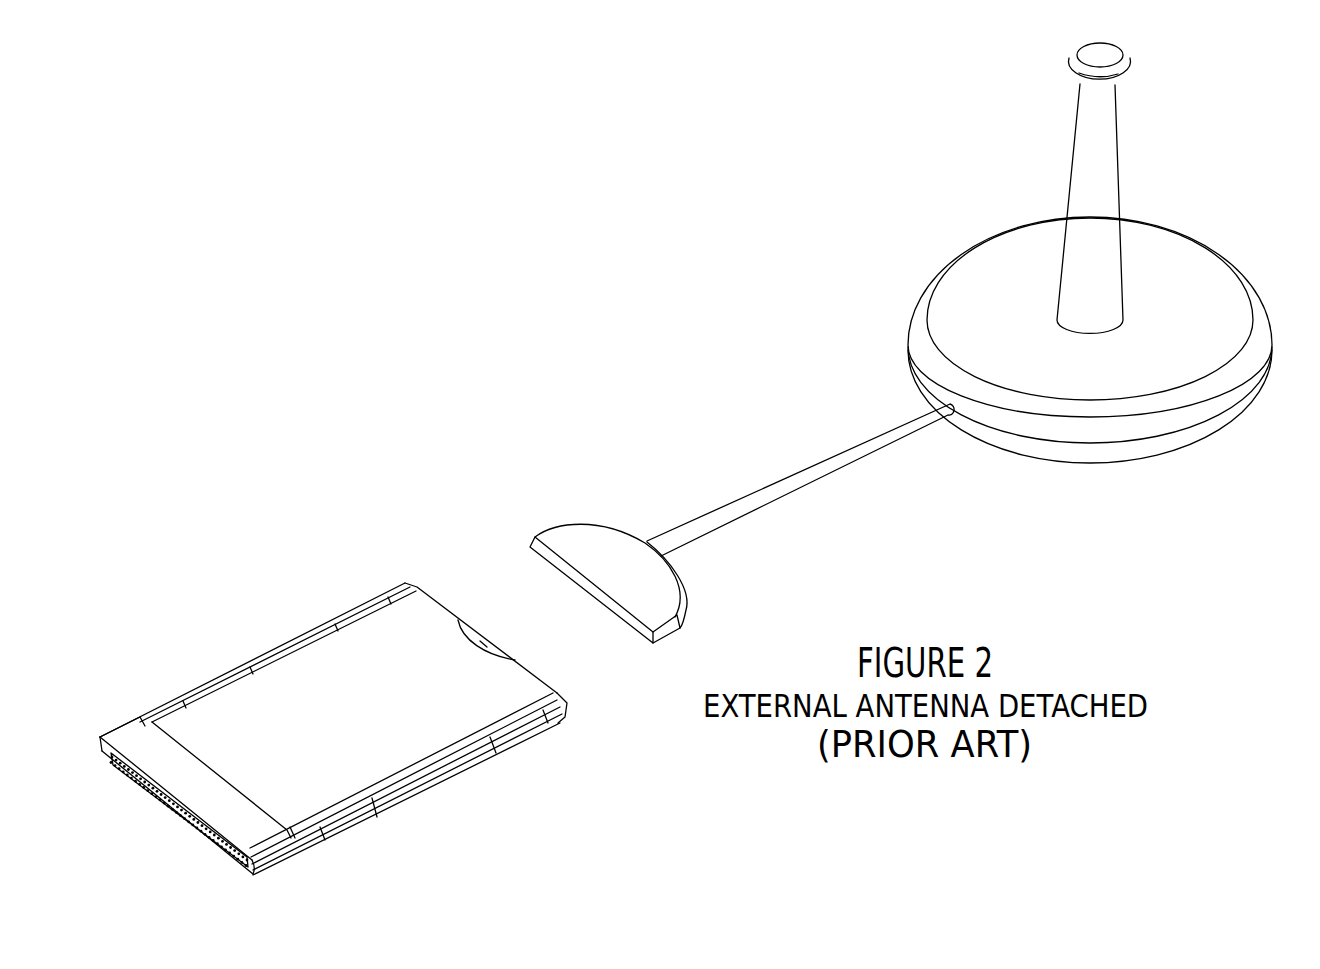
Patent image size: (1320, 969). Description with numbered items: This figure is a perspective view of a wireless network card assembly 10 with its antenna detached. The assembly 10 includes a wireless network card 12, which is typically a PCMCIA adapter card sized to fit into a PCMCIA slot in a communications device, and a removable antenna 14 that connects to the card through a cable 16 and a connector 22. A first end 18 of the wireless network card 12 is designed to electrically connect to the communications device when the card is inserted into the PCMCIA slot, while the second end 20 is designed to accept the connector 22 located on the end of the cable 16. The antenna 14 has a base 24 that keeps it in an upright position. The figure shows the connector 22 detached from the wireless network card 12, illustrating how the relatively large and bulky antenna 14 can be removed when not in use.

The wireless network card assembly 10 is at (438, 262).
The wireless network card 12 is at (438, 778).
The removable antenna 14 is at (1072, 160).
The cable 16 is at (813, 466).
The first end 18 is at (153, 798).
The second end 20 is at (443, 603).
The connector 22 is at (688, 598).
The base 24 is at (1040, 463).